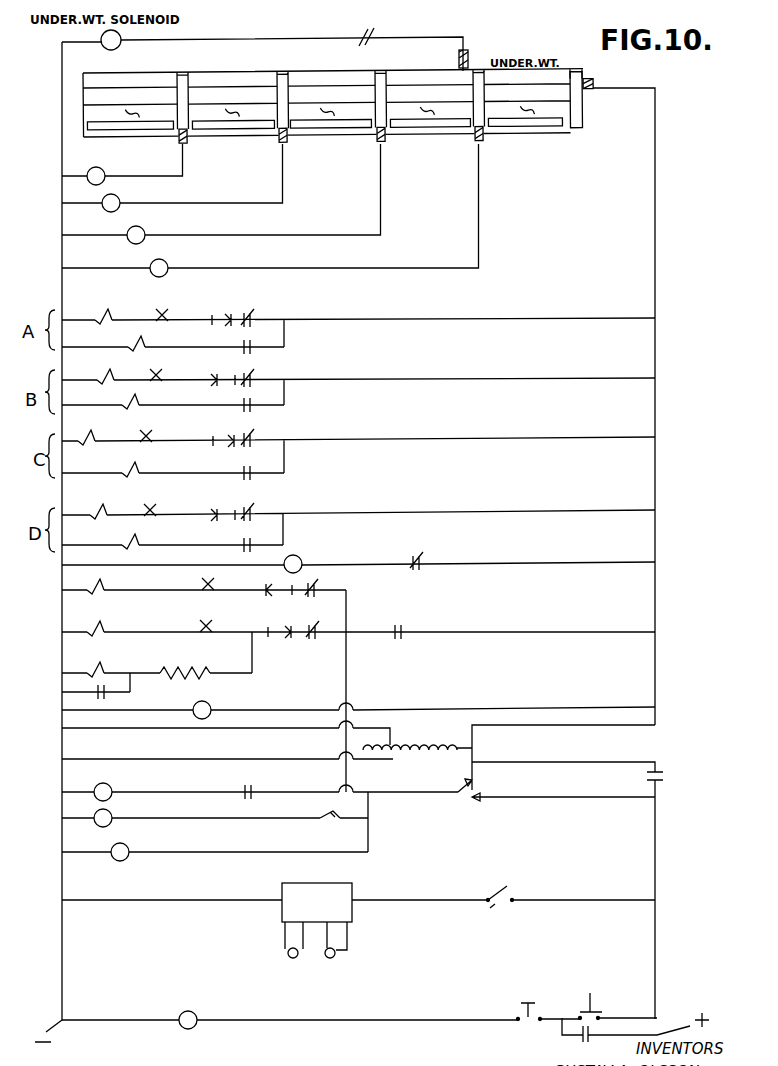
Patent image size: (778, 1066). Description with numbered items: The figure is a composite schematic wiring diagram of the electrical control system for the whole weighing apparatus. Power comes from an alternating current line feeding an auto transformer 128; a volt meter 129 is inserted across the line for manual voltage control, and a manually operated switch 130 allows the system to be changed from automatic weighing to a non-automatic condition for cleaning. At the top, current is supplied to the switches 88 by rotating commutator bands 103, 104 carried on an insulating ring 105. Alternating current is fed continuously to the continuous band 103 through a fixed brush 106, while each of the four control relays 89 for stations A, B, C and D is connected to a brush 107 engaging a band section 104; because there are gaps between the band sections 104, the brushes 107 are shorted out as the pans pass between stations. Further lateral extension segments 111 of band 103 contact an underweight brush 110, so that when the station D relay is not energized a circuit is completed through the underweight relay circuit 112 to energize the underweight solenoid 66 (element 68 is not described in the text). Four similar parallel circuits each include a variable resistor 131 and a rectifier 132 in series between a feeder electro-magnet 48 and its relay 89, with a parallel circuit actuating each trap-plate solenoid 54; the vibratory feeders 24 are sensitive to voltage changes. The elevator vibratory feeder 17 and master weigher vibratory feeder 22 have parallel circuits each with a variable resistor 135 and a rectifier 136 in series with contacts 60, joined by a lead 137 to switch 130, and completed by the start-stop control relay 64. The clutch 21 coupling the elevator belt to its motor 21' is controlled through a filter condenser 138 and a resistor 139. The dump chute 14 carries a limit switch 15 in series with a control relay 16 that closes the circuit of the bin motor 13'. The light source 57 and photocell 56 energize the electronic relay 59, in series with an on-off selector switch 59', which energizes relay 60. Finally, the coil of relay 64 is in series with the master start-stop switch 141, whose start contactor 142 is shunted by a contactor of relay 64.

The underweight solenoid 66 is at (118, 48).
The insulating ring 105 is at (92, 78).
The lateral extension segments 111 is at (188, 74).
The commutator 68 is at (195, 112).
The underweight relay circuit 112 is at (420, 38).
The commutator band 103 is at (420, 97).
The underweight brush 110 is at (470, 54).
The fixed brush 106 is at (592, 95).
The switches 88 is at (125, 113).
The commutator bands 104 is at (140, 132).
The brush 107 is at (188, 141).
The control relays 89 is at (101, 208).
The electro-magnet 48 is at (106, 316).
The solenoids 54 is at (135, 346).
The variable resistor 131 is at (163, 317).
The rectifier 132 is at (236, 318).
The control relay 60 is at (303, 562).
The elevator vibratory feeder 17 is at (86, 598).
The vibratory feeders 24 is at (102, 632).
The master weigher vibratory feeder 22 is at (83, 653).
The clutch 21 is at (62, 686).
The variable resistor 135 is at (204, 600).
The rectifier 136 is at (322, 667).
The start-stop control relay 64 is at (405, 630).
The resistor 139 is at (191, 680).
The volt meter 129 is at (211, 707).
The lead 137 is at (347, 694).
The filter condenser 138 is at (96, 702).
The auto transformer 128 is at (416, 742).
The manually operated switch 130 is at (464, 801).
The electric motor 13' is at (127, 784).
The control relay 16 is at (256, 790).
The limit switch 15 is at (342, 816).
The dump chute 14 is at (322, 822).
The motor 21' is at (156, 864).
The electronic relay 59 is at (351, 889).
The on-off selector switch 59' is at (503, 914).
The light source 57 is at (292, 958).
The photocell detector unit 56 is at (334, 958).
The master start-stop switch 141 is at (550, 1002).
The start contactor 142 is at (596, 1004).